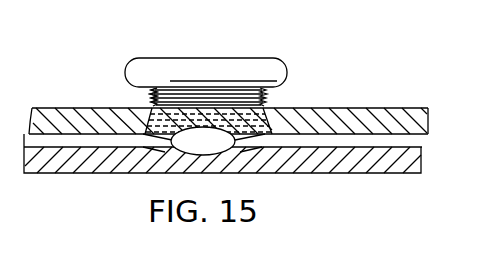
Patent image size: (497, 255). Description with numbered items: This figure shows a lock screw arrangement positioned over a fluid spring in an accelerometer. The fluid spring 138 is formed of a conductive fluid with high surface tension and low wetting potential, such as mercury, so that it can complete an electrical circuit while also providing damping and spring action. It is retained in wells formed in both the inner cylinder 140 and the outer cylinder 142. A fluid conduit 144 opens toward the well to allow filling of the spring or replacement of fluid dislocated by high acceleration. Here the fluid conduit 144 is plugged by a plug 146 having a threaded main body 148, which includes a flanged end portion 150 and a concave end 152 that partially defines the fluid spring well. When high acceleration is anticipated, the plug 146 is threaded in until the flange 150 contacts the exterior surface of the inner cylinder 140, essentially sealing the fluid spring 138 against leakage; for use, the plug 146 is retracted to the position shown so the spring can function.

The fluid spring 138 is at (213, 143).
The inner cylinder 140 is at (408, 168).
The outer cylinder 142 is at (413, 110).
The fluid conduit 144 is at (291, 71).
The plug 146 is at (210, 72).
The threaded main body 148 is at (152, 96).
The flanged end portion 150 is at (147, 155).
The concave end 152 is at (266, 95).